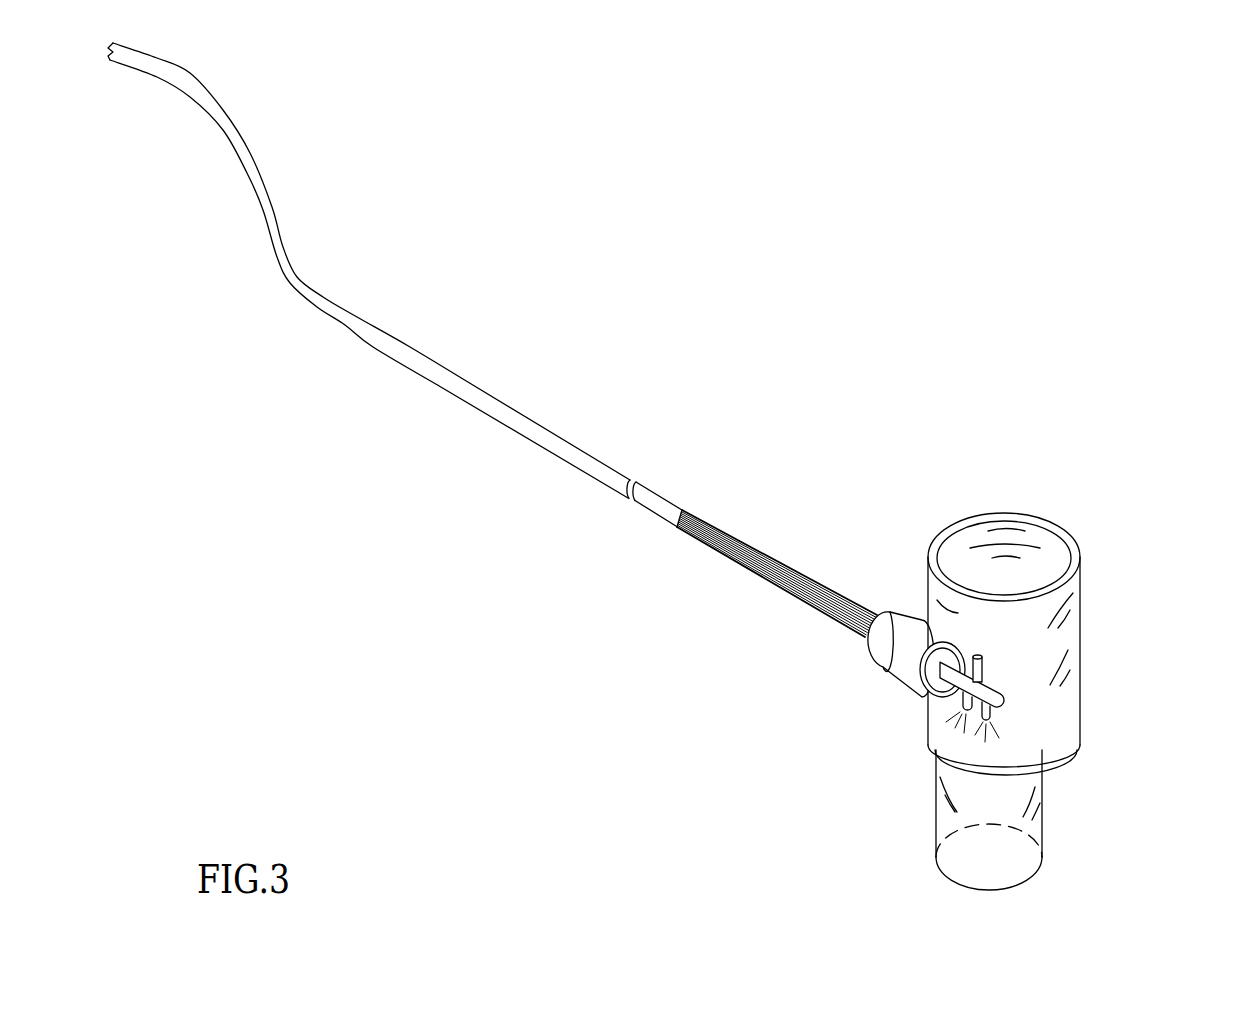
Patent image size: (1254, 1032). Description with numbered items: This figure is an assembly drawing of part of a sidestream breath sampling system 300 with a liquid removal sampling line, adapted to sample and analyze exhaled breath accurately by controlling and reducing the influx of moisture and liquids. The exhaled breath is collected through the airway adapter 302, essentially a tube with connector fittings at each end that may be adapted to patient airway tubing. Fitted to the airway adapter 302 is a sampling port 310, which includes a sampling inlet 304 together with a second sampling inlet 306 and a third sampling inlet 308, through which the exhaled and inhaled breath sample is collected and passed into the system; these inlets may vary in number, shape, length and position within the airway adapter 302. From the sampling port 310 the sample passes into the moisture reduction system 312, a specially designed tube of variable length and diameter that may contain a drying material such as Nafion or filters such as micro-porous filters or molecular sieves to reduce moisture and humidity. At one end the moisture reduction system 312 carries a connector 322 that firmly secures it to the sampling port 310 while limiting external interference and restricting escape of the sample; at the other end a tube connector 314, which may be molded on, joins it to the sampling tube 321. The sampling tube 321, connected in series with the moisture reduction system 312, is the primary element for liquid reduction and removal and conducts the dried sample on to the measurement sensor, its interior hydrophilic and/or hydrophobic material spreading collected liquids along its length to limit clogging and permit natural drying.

The sampling system 300 is at (668, 466).
The airway adapter 302 is at (1108, 660).
The sampling inlet 304 is at (927, 703).
The second sampling inlet 306 is at (987, 651).
The third sampling inlet 308 is at (987, 693).
The sampling port 310 is at (930, 690).
The moisture reduction system 312 is at (765, 528).
The tube connector 314 is at (675, 477).
The sampling tube 321 is at (522, 388).
The connector 322 is at (870, 673).